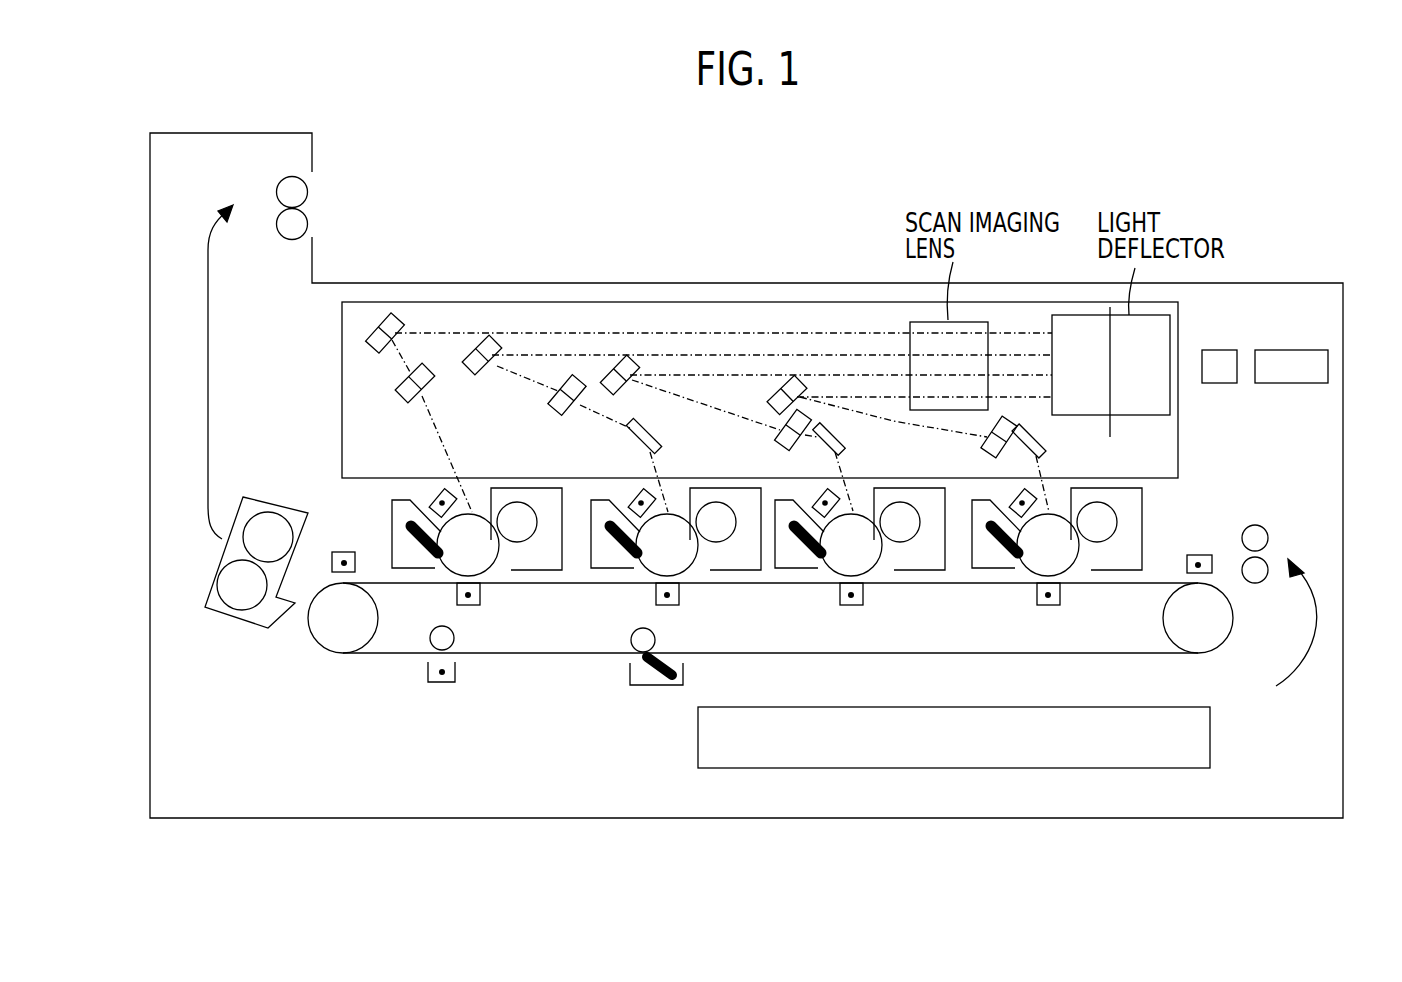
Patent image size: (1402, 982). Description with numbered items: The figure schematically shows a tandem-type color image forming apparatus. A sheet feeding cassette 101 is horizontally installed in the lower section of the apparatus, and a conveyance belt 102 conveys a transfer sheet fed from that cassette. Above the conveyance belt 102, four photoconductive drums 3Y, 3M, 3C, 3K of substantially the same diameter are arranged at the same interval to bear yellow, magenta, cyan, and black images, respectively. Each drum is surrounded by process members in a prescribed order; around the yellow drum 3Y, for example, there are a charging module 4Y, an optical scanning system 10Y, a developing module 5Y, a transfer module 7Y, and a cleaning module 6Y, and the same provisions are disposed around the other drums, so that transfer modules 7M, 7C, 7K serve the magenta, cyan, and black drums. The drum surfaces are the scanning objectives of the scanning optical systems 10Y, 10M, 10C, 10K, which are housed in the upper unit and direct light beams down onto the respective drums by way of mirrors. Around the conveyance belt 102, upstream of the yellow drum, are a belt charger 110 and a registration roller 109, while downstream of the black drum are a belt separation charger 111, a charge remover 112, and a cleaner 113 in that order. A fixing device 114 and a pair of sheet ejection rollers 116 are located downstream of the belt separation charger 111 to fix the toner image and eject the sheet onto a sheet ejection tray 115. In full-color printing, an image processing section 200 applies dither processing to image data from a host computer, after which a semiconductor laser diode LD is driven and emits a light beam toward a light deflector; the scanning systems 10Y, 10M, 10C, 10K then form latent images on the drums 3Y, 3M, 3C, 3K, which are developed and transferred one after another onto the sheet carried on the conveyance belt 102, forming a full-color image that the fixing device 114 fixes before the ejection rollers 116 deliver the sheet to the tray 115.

The sheet feeding cassette 101 is at (807, 768).
The conveyance belt 102 is at (548, 655).
The registration roller 109 is at (1262, 525).
The belt charger 110 is at (1205, 553).
The belt separation charger 111 is at (340, 551).
The charge remover 112 is at (446, 686).
The cleaner 113 is at (648, 687).
The fixing device 114 is at (238, 627).
The sheet ejection tray 115 is at (380, 283).
The pair of sheet ejection rollers 116 is at (308, 208).
The optical scanning system 10K is at (427, 410).
The optical scanning system 10C is at (522, 377).
The optical scanning system 10M is at (728, 407).
The optical scanning system 10Y is at (893, 421).
The charging module 4Y is at (984, 489).
The developing module 5Y is at (1142, 521).
The cleaning module 6Y is at (988, 568).
The photoconductive drum 3K is at (490, 567).
The photoconductive drum 3C is at (689, 567).
The photoconductive drum 3M is at (873, 567).
The photoconductive drum 3Y is at (1070, 567).
The transfer module 7K is at (478, 607).
The transfer module 7C is at (677, 607).
The transfer module 7M is at (861, 607).
The transfer module 7Y is at (1058, 607).
The semiconductor laser diode LD is at (1212, 349).
The image processing section 200 is at (1290, 348).